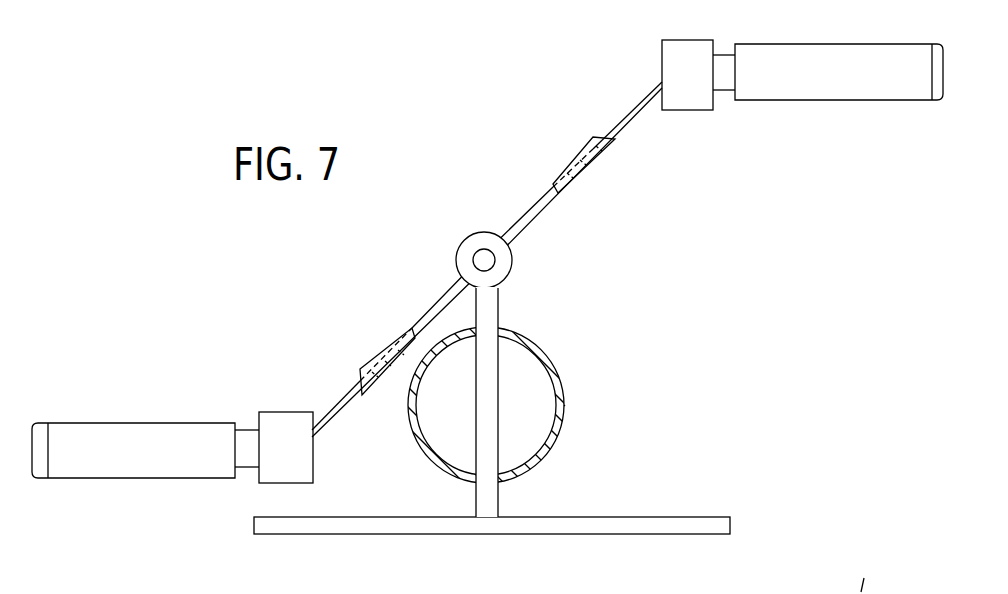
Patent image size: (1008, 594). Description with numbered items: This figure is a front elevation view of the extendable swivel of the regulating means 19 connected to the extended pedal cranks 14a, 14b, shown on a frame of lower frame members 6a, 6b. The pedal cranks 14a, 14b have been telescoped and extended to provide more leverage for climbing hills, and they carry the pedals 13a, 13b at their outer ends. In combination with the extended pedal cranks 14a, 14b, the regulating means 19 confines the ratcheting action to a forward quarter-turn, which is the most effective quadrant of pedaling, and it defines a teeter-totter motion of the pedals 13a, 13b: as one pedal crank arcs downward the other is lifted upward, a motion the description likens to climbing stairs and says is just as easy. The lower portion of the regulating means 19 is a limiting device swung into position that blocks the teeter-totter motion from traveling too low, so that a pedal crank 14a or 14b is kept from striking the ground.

The lower frame member 6a is at (415, 450).
The lower frame member 6b is at (563, 442).
The regulating means 19 is at (466, 233).
The pedal 13a is at (162, 418).
The pedal 13b is at (837, 105).
The pedal crank 14a is at (285, 403).
The pedal crank 14b is at (692, 115).